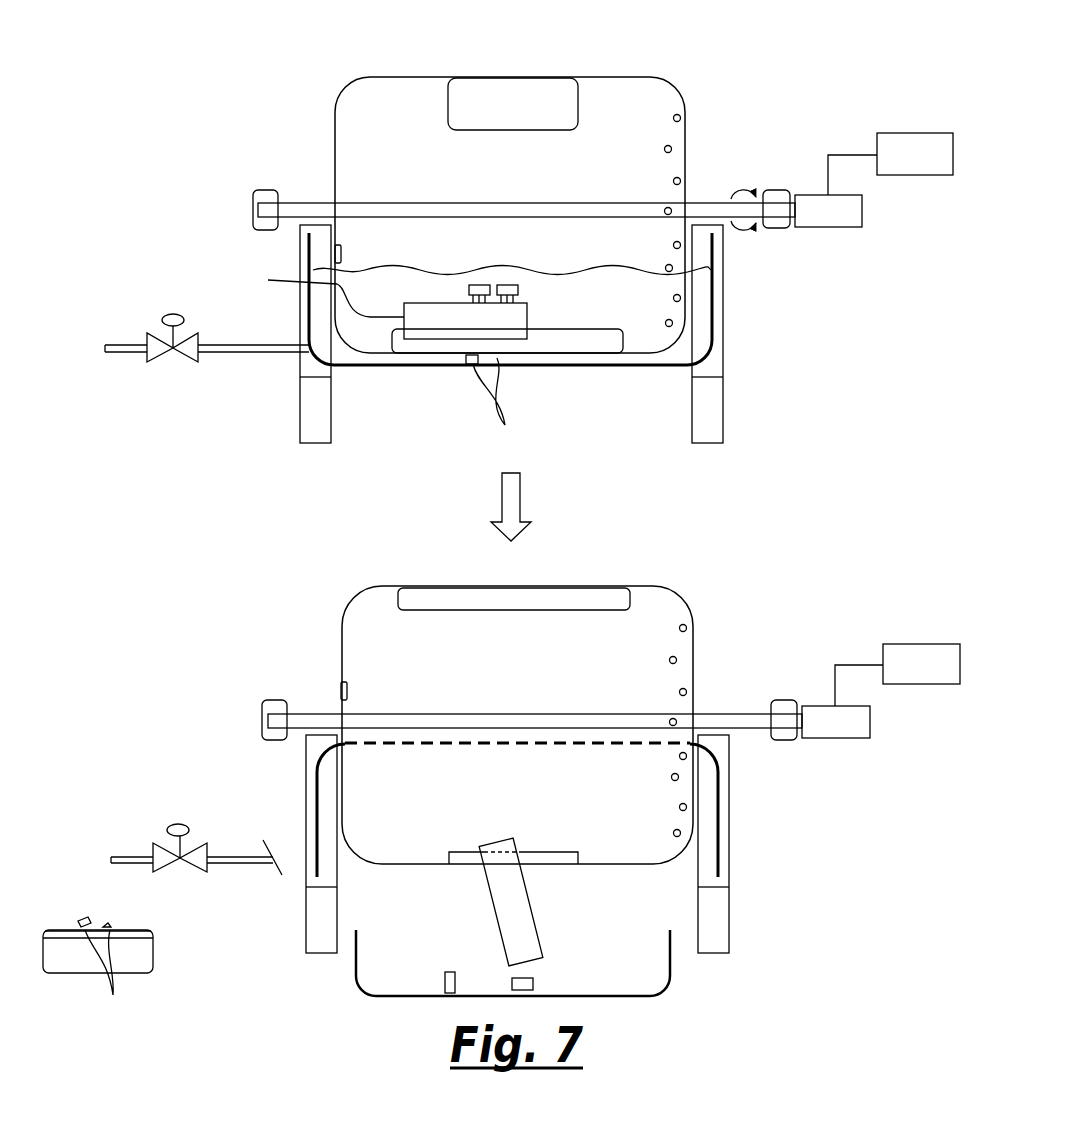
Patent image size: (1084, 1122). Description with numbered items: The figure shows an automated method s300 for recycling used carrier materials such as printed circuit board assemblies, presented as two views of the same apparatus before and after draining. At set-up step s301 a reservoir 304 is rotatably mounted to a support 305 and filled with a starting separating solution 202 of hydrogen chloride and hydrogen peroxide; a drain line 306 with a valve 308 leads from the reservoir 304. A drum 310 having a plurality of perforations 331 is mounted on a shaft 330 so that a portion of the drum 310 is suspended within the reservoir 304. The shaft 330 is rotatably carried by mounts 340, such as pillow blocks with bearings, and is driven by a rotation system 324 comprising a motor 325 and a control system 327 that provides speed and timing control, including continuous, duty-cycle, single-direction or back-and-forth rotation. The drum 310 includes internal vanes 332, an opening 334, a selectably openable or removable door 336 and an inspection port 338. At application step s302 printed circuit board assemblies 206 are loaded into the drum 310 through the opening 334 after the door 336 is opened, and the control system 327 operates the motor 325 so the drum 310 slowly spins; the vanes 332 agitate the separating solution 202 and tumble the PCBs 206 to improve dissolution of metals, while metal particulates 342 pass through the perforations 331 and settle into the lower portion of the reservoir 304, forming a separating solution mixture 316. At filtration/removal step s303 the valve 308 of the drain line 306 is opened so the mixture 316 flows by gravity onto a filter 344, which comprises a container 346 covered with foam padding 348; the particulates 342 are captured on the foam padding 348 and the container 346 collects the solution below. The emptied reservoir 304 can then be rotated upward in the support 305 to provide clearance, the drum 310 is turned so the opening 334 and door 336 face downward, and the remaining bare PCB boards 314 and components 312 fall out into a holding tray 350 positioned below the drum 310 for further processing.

The automated method s300 is at (225, 38).
The set-up step s301 is at (702, 92).
The application step s302 is at (441, 290).
The filtration/removal step s303 is at (583, 553).
The separating solution 202 is at (604, 291).
The printed circuit board assemblies 206 is at (318, 290).
The reservoir 304 is at (428, 367).
The support 305 is at (300, 432).
The drain line 306 is at (277, 354).
The valve 308 is at (150, 364).
The drum 310 is at (335, 138).
The components 312 is at (520, 290).
The bare PCB boards 314 is at (492, 890).
The separating solution mixture M 316 is at (420, 284).
The rotation system 324 is at (816, 120).
The motor 325 is at (833, 228).
The control system 327 is at (900, 176).
The shaft 330 is at (520, 203).
The perforations 331 is at (672, 150).
The internal vanes 332 is at (580, 342).
The opening 334 is at (498, 87).
The door 336 is at (447, 86).
The inspection port 338 is at (342, 253).
The mounts 340 is at (253, 196).
The metal particulates 342 is at (299, 690).
The filter 344 is at (137, 974).
The container 346 is at (154, 955).
The foam padding 348 is at (150, 933).
The holding tray 350 is at (668, 985).